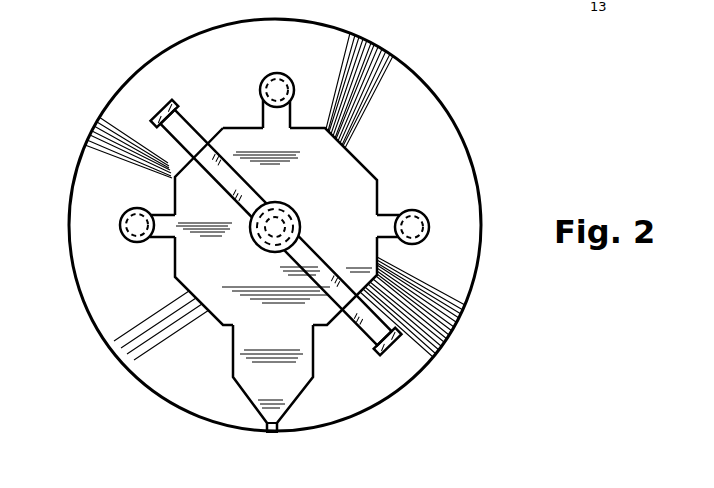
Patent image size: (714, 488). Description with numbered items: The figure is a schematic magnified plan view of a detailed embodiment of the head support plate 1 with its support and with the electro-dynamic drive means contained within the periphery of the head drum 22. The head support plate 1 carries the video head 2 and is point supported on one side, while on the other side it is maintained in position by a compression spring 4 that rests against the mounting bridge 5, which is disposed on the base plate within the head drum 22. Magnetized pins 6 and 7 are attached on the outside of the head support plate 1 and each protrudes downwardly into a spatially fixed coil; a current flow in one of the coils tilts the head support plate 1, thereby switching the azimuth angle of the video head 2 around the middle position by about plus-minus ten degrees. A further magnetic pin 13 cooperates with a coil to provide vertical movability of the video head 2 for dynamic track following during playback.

The head support plate 1 is at (178, 278).
The video head 2 is at (268, 429).
The compression spring 4 is at (299, 219).
The mounting bridge 5 is at (398, 337).
The magnetized pin 6 is at (122, 214).
The magnetized pin 7 is at (430, 229).
The magnetic pin 13 is at (260, 88).
The head drum 22 is at (410, 388).